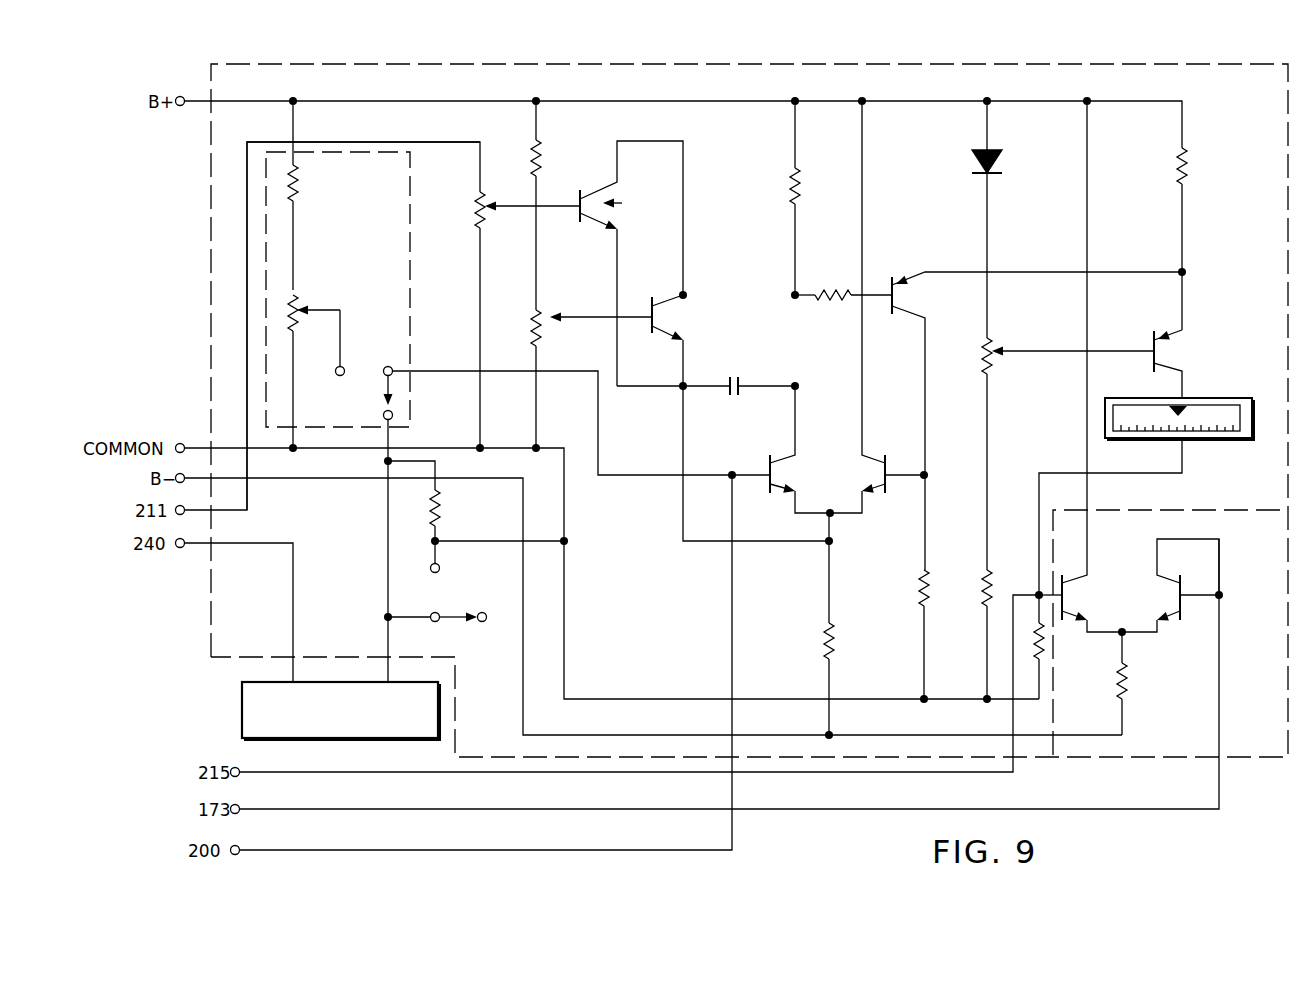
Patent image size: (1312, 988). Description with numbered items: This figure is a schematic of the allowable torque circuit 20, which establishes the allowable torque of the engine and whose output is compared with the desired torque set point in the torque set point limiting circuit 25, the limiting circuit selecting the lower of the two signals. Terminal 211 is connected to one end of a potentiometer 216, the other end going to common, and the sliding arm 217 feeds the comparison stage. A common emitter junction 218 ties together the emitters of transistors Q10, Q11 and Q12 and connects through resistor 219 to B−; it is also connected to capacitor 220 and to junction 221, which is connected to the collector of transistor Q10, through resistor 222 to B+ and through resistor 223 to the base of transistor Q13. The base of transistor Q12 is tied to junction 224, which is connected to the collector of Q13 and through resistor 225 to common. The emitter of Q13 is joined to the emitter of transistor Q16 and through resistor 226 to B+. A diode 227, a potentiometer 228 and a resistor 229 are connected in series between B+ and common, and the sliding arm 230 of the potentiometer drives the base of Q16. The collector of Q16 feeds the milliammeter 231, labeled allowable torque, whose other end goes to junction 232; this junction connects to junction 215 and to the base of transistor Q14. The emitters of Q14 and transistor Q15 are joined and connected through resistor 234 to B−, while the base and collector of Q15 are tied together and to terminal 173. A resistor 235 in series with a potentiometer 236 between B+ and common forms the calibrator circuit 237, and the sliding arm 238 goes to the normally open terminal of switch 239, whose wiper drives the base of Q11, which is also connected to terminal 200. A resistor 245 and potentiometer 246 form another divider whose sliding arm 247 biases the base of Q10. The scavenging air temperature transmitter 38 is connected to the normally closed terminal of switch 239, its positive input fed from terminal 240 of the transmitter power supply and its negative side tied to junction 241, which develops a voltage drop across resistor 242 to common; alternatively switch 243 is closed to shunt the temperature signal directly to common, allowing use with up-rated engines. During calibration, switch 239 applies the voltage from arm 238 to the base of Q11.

The allowable torque circuit 20 is at (445, 745).
The torque set point limiting circuit 25 is at (1270, 764).
The scavenging air temperature transmitter 38 is at (242, 706).
The terminal 173 is at (729, 674).
The terminal 200 is at (485, 662).
The terminal 211 is at (332, 326).
The junction 215 is at (639, 683).
The potentiometer 216 is at (484, 197).
The sliding arm 217 is at (486, 212).
The junction 218 is at (677, 392).
The resistor 219 is at (835, 640).
The capacitor 220 is at (737, 394).
The junction 221 is at (790, 294).
The resistor 222 is at (800, 190).
The resistor 223 is at (848, 302).
The junction 224 is at (928, 474).
The resistor 225 is at (918, 580).
The resistor 226 is at (1188, 168).
The diode 227 is at (1003, 166).
The potentiometer 228 is at (991, 340).
The resistor 229 is at (978, 580).
The sliding arm 230 is at (1000, 360).
The milliammeter 231 is at (1104, 418).
The junction 232 is at (1012, 584).
The resistor 234 is at (1130, 679).
The resistor 235 is at (299, 182).
The potentiometer 236 is at (300, 300).
The calibrator circuit 237 is at (410, 160).
The sliding arm 238 is at (340, 305).
The switch 239 is at (360, 380).
The terminal 240 is at (238, 612).
The junction 241 is at (385, 462).
The resistor 242 is at (440, 497).
The switch 243 is at (452, 585).
The resistor 245 is at (541, 152).
The potentiometer 246 is at (540, 312).
The sliding arm 247 is at (545, 326).
The transistor Q10 is at (690, 316).
The transistor Q11 is at (790, 467).
The transistor Q12 is at (866, 480).
The transistor Q13 is at (918, 294).
The transistor Q14 is at (1079, 590).
The transistor Q15 is at (1163, 602).
The transistor Q16 is at (1180, 351).